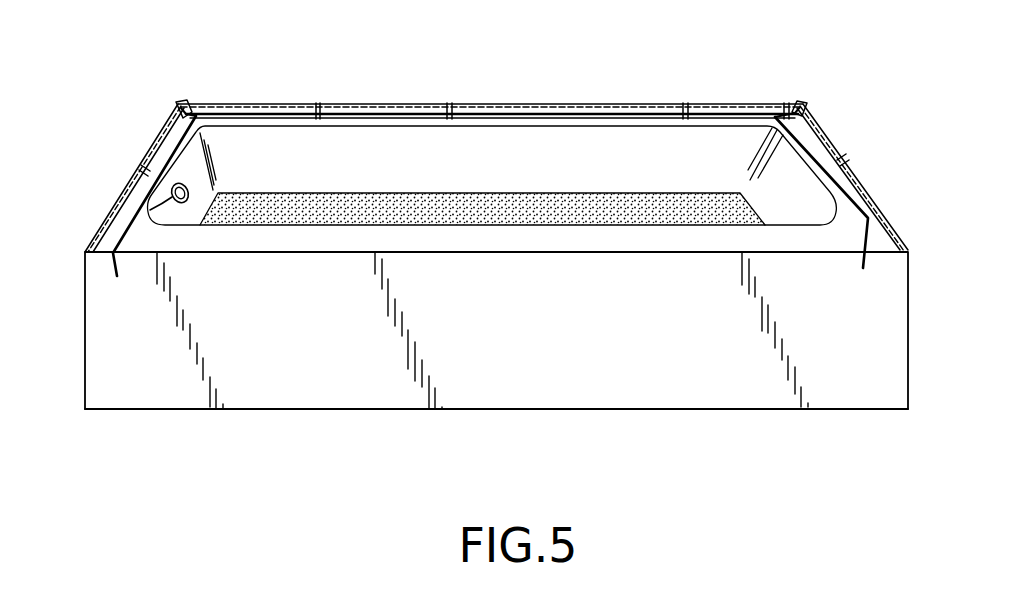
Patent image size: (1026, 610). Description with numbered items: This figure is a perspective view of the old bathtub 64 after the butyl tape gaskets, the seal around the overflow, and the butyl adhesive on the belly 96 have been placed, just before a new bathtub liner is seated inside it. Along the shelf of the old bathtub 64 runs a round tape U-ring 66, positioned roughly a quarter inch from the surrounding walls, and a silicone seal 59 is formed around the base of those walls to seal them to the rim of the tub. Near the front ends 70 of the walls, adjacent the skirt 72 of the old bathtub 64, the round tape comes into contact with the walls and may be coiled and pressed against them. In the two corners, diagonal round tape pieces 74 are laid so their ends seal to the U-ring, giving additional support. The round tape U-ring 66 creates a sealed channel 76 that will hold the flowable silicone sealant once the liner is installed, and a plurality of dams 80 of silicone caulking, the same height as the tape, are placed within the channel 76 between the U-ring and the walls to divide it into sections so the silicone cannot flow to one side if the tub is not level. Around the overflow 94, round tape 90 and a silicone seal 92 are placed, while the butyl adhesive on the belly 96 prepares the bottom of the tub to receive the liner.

The silicone seal 59 is at (273, 105).
The old bathtub 64 is at (845, 409).
The round tape U-ring 66 is at (490, 115).
The front ends of the walls 70 is at (97, 235).
The skirt 72 is at (496, 352).
The diagonal round tape pieces 74 is at (180, 110).
The sealed channel 76 is at (209, 117).
The dams 80 is at (188, 105).
The round tape 90 is at (186, 187).
The silicone seal 92 is at (190, 197).
The overflow 94 is at (146, 199).
The belly 96 is at (580, 205).